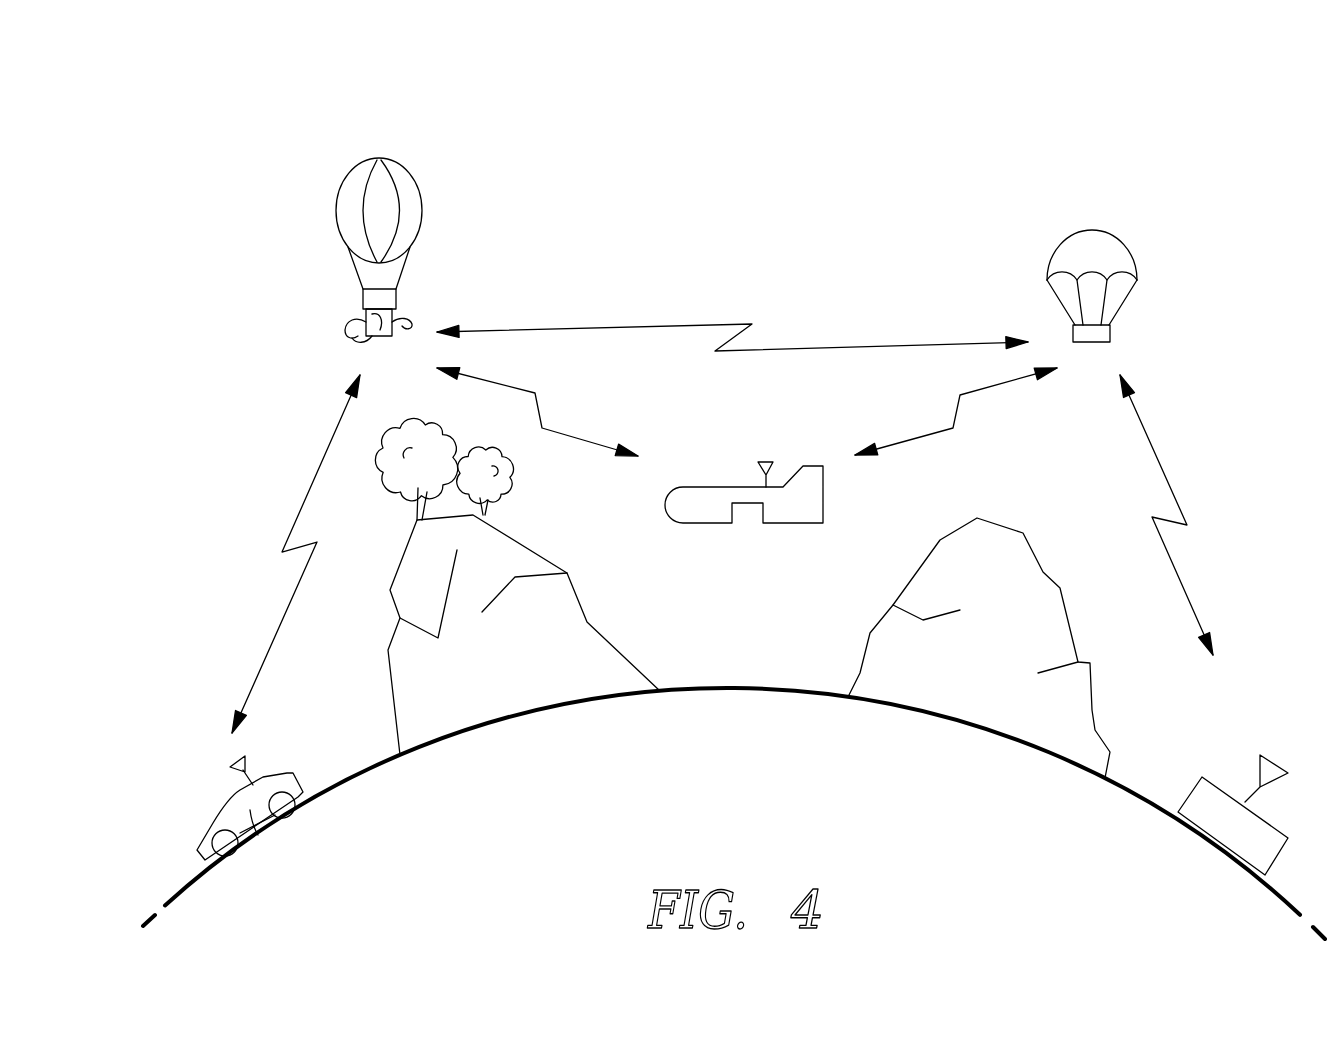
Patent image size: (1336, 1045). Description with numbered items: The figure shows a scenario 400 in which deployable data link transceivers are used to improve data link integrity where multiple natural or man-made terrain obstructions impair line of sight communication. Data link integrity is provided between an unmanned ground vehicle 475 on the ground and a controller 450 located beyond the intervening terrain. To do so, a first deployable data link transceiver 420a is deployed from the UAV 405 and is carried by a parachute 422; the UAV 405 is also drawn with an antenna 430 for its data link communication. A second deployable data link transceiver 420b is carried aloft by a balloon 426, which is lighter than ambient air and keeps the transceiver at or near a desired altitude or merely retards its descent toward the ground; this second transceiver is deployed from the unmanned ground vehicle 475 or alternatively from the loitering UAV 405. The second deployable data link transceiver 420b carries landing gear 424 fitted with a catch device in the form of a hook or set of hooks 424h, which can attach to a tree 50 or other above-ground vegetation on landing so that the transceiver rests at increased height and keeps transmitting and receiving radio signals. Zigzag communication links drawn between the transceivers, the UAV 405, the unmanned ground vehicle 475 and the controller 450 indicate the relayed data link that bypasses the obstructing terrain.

The communication system 400 is at (1233, 223).
The UAV 405 is at (690, 487).
The first deployable data link transceiver 420a is at (1102, 332).
The second deployable data link transceiver 420b is at (365, 298).
The parachute 422 is at (1063, 250).
The landing gear 424 is at (393, 318).
The hooks 424h is at (375, 330).
The balloon 426 is at (412, 180).
The antenna 430 is at (765, 460).
The controller 450 is at (1218, 785).
The unmanned ground vehicle 475 is at (258, 838).
The tree 50 is at (400, 500).